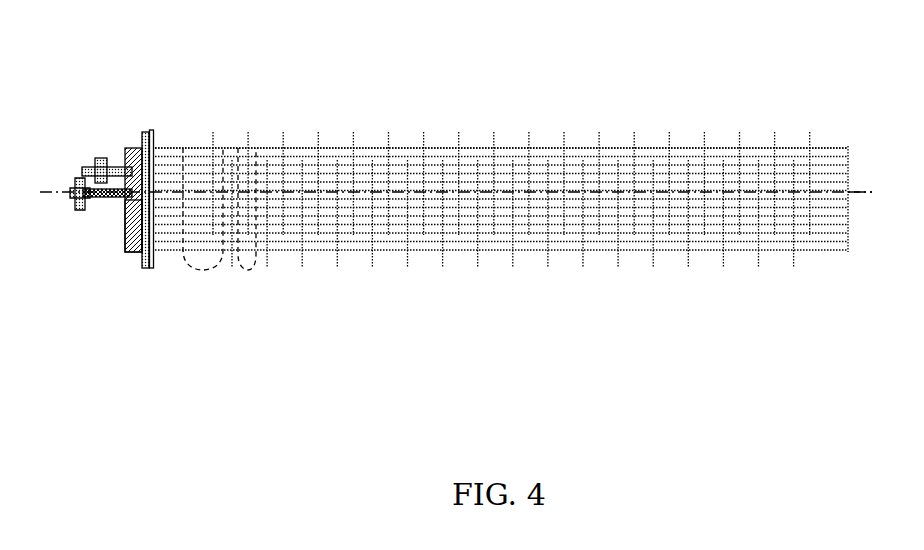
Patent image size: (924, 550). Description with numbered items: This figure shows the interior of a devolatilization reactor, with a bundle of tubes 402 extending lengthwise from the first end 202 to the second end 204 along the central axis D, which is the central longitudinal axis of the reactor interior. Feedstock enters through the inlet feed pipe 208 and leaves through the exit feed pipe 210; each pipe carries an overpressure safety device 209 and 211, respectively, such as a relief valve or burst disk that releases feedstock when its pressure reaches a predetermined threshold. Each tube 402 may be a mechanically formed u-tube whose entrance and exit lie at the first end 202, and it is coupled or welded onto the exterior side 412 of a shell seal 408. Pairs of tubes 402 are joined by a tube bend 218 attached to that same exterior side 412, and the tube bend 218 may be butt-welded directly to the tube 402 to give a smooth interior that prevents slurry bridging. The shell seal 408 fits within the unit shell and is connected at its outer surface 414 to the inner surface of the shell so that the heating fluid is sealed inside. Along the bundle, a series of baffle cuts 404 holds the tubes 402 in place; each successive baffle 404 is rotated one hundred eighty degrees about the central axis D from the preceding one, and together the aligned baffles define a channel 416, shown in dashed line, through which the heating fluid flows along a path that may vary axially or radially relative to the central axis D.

The first end 202 is at (215, 98).
The second end 204 is at (745, 102).
The inlet feed pipe 208 is at (108, 200).
The overpressure safety device 209 is at (78, 213).
The exit feed pipe 210 is at (117, 157).
The overpressure safety device 211 is at (111, 159).
The tube bend 218 is at (126, 233).
The tube 402 is at (410, 146).
The baffle cut 404 is at (215, 136).
The shell seal 408 is at (154, 262).
The exterior side 412 is at (139, 146).
The outer surface 414 is at (150, 129).
The channel 416 is at (256, 276).
The central axis D is at (861, 185).